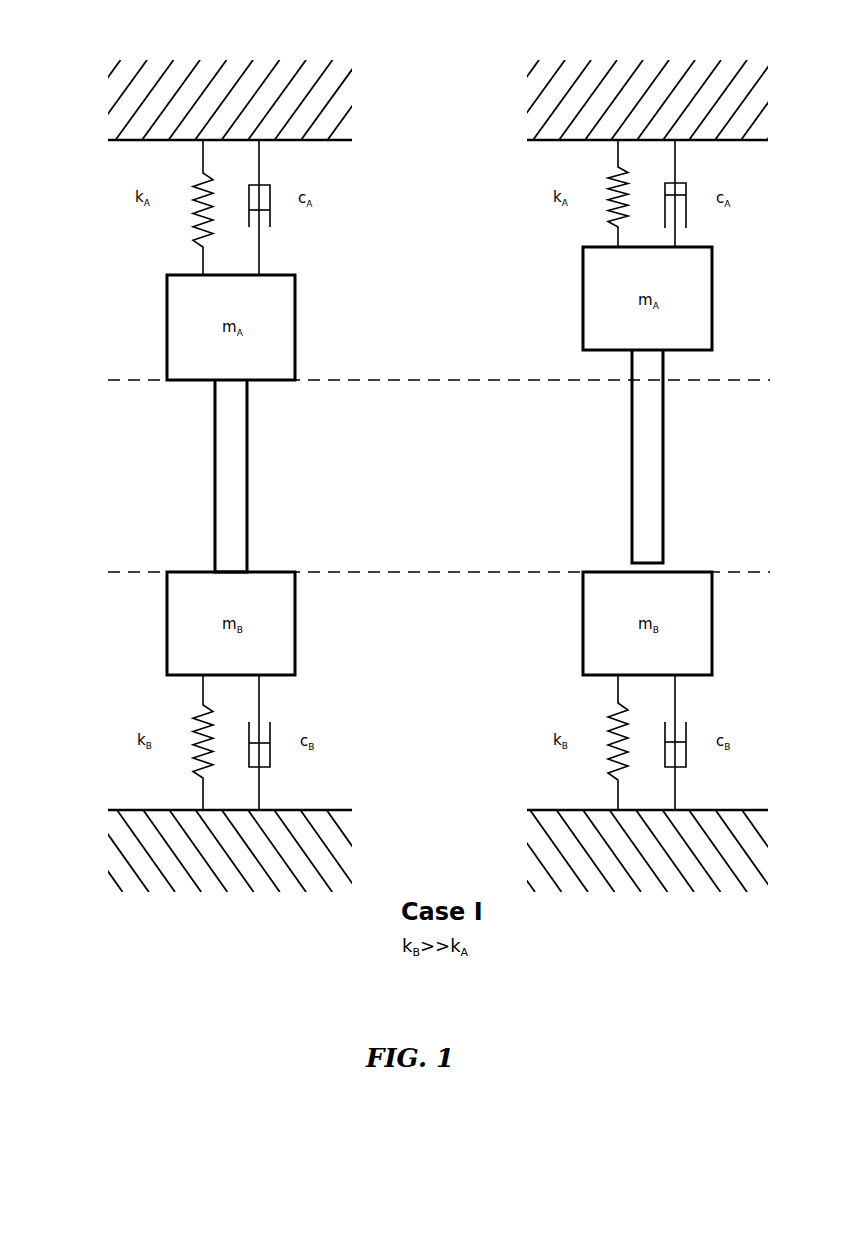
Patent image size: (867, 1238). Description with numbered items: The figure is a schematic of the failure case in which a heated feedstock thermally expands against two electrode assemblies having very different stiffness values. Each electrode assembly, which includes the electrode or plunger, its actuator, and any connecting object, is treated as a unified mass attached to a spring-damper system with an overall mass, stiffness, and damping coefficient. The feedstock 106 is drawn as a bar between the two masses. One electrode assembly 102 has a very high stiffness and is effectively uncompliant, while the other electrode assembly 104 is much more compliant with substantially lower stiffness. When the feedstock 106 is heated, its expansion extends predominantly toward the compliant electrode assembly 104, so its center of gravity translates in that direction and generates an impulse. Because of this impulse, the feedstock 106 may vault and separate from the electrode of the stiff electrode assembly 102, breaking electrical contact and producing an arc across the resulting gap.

The electrode assembly 102 is at (138, 632).
The electrode assembly 104 is at (138, 327).
The feedstock 106 is at (186, 457).